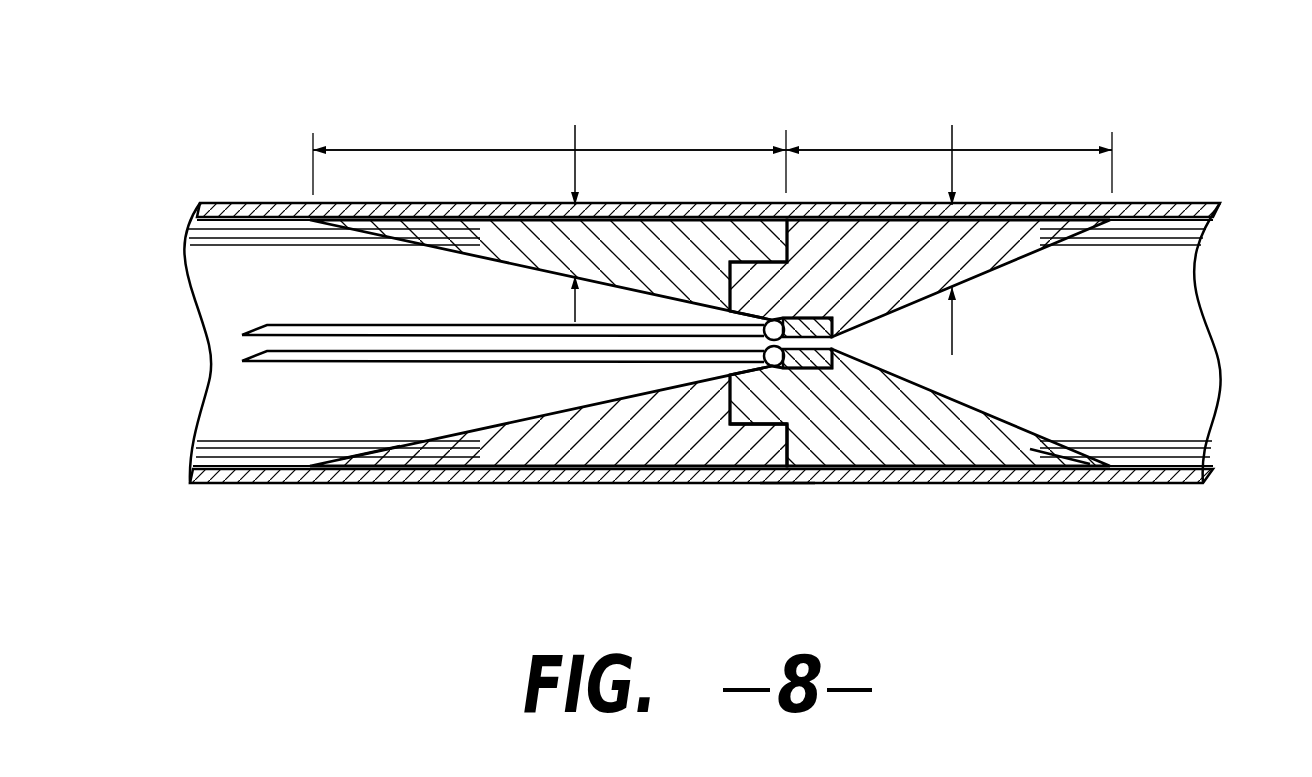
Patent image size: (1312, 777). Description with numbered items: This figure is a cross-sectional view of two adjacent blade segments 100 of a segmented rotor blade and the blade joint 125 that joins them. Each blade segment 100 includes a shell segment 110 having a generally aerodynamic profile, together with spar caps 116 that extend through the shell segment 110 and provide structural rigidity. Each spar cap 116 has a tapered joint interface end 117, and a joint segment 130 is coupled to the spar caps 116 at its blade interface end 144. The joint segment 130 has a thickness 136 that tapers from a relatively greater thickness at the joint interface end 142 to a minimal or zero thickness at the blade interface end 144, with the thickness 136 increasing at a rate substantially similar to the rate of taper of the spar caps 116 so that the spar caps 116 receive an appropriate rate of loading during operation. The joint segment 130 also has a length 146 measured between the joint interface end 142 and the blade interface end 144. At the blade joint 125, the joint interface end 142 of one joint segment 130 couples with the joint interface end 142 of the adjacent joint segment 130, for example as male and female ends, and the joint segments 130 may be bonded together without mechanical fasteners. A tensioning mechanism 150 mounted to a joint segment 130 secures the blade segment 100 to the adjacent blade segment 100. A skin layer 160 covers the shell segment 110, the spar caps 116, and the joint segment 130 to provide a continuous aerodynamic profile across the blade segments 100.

The blade segment 100 is at (715, 256).
The shell segment 110 is at (230, 385).
The spar caps 116 is at (197, 233).
The tapered joint interface end 117 is at (377, 447).
The blade joint 125 is at (787, 487).
The joint segment 130 is at (513, 243).
The thickness 136 is at (577, 157).
The joint interface end 142 is at (767, 452).
The blade interface end 144 is at (412, 455).
The length 146 is at (463, 148).
The tensioning mechanism 150 is at (415, 325).
The skin layer 160 is at (743, 213).